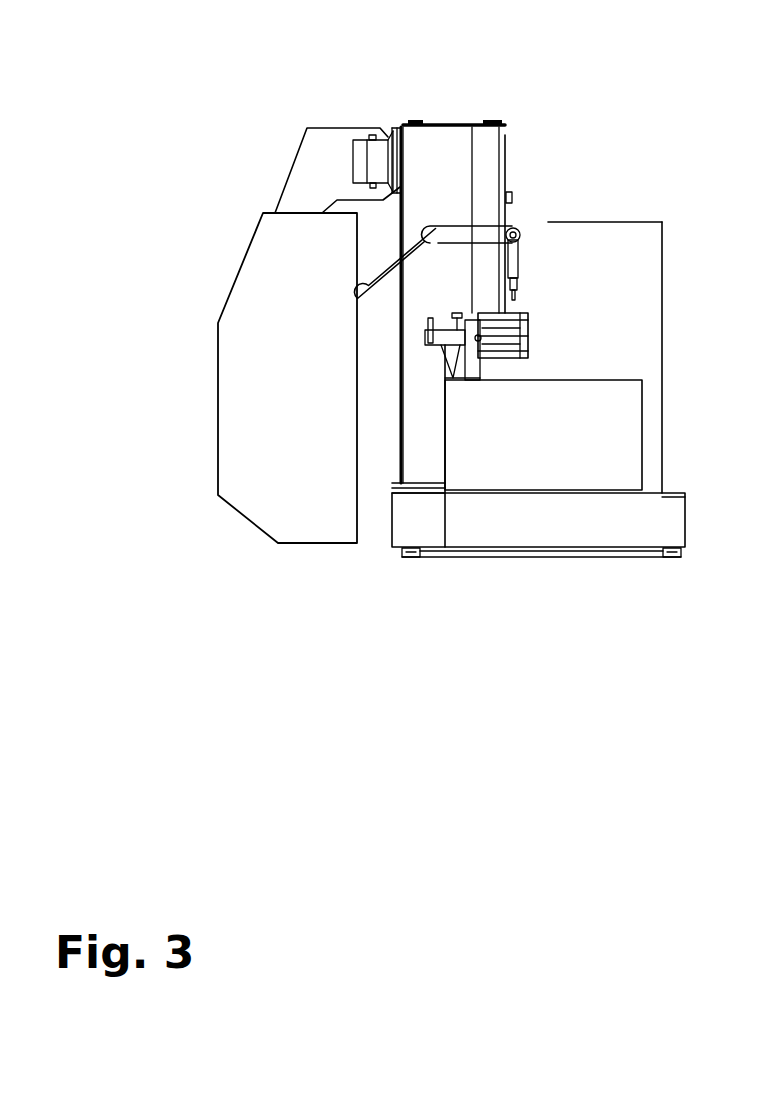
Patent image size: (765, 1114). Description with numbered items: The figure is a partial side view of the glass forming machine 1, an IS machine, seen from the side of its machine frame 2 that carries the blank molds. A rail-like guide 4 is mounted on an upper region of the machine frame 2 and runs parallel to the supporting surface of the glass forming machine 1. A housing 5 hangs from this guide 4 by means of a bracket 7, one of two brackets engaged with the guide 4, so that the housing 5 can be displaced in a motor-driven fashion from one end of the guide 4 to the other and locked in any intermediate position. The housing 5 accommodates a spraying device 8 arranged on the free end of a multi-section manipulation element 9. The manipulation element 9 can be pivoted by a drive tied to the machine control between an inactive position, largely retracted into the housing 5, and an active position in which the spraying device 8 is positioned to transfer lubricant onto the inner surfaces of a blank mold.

The glass forming machine 1 is at (538, 96).
The machine frame 2 is at (460, 126).
The rail-like guide 4 is at (378, 155).
The housing 5 is at (238, 410).
The bracket 7 is at (323, 155).
The spraying device 8 is at (517, 262).
The manipulation element 9 is at (453, 228).